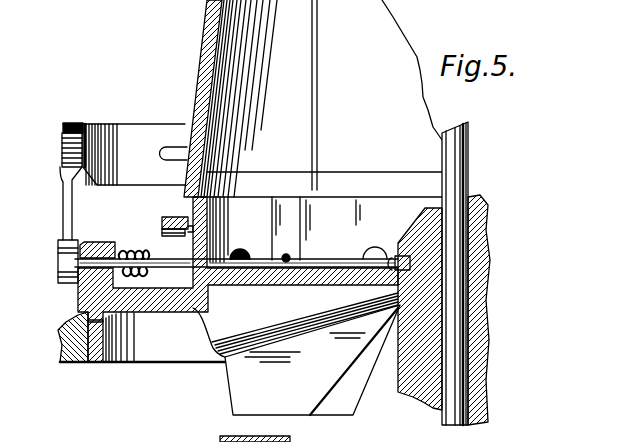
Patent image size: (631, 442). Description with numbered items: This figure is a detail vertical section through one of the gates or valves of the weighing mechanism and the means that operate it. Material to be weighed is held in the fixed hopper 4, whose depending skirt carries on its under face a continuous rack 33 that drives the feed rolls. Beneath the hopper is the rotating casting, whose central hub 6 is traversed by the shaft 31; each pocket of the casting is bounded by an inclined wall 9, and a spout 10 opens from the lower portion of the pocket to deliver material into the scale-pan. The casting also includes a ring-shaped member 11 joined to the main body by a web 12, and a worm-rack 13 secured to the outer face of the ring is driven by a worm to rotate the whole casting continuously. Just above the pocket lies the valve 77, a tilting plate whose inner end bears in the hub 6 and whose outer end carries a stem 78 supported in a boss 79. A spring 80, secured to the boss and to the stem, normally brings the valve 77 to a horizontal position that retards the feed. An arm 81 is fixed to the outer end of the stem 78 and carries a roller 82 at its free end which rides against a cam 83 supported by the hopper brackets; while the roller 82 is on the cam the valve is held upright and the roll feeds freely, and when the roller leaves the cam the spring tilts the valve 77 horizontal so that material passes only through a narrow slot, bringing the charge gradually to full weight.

The hopper 4 is at (313, 131).
The hub 6 is at (423, 383).
The inclined wall 9 is at (305, 327).
The spout 10 is at (312, 360).
The ring-shaped member 11 is at (112, 389).
The web 12 is at (182, 300).
The worm-rack 13 is at (52, 355).
The shaft 31 is at (452, 348).
The rack 33 is at (173, 241).
The valve 77 is at (318, 263).
The stem 78 is at (158, 253).
The boss 79 is at (97, 243).
The spring 80 is at (130, 250).
The arm 81 is at (68, 210).
The roller 82 is at (60, 160).
The cam 83 is at (118, 130).